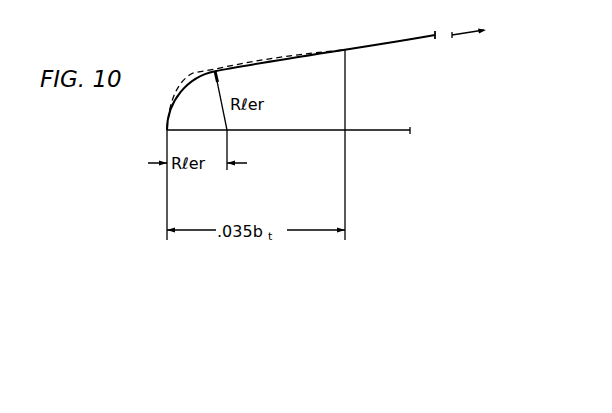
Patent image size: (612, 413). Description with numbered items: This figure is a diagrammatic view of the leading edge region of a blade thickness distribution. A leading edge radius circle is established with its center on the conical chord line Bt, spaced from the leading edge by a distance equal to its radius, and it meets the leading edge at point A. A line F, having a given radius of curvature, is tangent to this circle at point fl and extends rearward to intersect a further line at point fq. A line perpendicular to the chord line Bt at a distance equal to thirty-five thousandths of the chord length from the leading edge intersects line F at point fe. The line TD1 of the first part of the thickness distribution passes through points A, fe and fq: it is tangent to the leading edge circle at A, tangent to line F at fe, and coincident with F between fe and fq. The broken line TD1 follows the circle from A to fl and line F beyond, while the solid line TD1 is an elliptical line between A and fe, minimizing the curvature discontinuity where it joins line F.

The point A is at (167, 129).
The point fl is at (256, 90).
The line F is at (248, 76).
The point fe is at (345, 50).
The line of the first part of the thickness distribution TD1 is at (414, 38).
The point fq is at (484, 30).
The conical chord line Bt is at (388, 130).